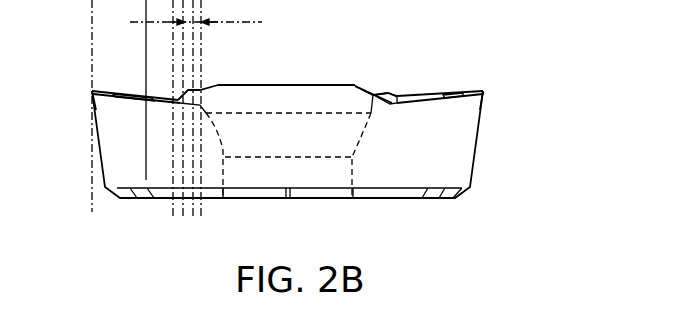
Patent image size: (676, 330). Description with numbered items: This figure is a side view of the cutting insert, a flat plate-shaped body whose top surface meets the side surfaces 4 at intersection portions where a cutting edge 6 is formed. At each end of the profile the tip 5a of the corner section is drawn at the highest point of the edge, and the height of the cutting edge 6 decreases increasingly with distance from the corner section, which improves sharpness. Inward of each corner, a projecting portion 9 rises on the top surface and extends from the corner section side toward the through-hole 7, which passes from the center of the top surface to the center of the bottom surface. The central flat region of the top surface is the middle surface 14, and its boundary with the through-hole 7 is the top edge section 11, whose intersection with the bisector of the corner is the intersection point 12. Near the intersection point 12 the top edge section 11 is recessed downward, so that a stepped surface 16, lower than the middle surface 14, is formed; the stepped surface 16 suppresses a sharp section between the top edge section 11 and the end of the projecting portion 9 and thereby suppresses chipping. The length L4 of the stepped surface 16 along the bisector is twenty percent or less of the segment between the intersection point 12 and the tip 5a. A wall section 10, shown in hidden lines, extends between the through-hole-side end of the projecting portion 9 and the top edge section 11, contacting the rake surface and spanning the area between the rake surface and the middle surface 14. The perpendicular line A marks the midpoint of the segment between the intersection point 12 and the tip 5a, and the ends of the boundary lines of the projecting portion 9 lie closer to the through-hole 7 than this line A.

The side surfaces 4 is at (92, 102).
The tip of the corner section 5a is at (92, 91).
The cutting edge 6 is at (155, 98).
The through-hole 7 is at (332, 100).
The projecting portion 9 is at (122, 93).
The wall section 10 is at (371, 113).
The top edge section 11 is at (272, 85).
The intersection point 12 is at (201, 90).
The middle surface 14 is at (298, 85).
The stepped surface 16 is at (382, 92).
The length of the stepped surface L4 is at (196, 12).
The perpendicular line A is at (149, 233).